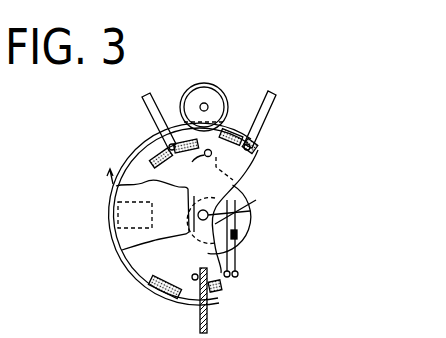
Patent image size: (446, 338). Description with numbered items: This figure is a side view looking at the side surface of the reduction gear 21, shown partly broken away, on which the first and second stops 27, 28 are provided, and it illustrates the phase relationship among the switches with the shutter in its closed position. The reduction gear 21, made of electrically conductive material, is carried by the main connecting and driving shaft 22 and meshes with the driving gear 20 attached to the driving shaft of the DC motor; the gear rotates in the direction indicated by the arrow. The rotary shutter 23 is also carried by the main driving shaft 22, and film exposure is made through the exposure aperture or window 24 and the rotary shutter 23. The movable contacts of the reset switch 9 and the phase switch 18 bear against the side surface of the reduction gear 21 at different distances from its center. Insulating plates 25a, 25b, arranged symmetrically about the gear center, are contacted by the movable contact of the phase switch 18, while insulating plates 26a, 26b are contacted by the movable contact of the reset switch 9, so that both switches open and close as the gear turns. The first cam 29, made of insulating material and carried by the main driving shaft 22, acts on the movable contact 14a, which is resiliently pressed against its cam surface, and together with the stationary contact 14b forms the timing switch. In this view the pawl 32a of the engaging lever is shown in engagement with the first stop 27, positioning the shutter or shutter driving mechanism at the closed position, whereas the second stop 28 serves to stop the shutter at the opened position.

The reset switch 9 is at (143, 113).
The phase switch 18 is at (278, 108).
The driving gear 20 is at (226, 90).
The reduction gear 21 is at (245, 160).
The main connecting and driving shaft 22 is at (250, 212).
The rotary shutter 23 is at (122, 239).
The exposure aperture or window 24 is at (118, 215).
The insulating plate 25a is at (256, 146).
The insulating plate 25b is at (150, 289).
The insulating plate 26a is at (157, 155).
The insulating plate 26b is at (224, 285).
The first stop 27 is at (193, 274).
The second stop 28 is at (204, 197).
The first cam 29 is at (250, 207).
The pawl 32a is at (199, 316).
The movable contact 14a is at (237, 240).
The stationary contact 14b is at (238, 268).